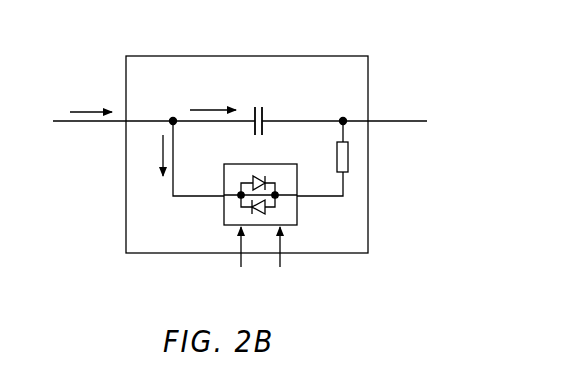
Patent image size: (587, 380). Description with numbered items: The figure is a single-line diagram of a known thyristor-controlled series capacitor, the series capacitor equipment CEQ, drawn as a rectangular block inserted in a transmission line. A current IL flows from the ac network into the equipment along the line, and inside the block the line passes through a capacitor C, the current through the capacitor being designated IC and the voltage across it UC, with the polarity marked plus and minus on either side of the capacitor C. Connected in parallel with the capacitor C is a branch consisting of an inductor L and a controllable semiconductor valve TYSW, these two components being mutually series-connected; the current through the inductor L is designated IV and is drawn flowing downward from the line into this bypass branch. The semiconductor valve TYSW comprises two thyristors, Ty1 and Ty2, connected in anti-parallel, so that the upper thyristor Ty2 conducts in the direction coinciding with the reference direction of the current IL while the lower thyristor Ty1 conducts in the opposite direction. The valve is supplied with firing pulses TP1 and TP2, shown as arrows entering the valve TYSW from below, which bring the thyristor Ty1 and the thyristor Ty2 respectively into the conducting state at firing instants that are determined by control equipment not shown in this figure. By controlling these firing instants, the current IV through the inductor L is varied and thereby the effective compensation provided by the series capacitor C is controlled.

The series capacitor equipment CEQ is at (368, 238).
The current IL is at (91, 99).
The capacitor current IC is at (213, 98).
The capacitor voltage UC is at (263, 88).
The capacitor C is at (263, 127).
The current through the inductor IV is at (183, 158).
The inductor L is at (348, 157).
The controllable semiconductor valve TYSW is at (270, 190).
The thyristor Ty1 is at (252, 208).
The thyristor Ty2 is at (257, 178).
The firing pulse TP1 is at (237, 265).
The firing pulse TP2 is at (281, 265).